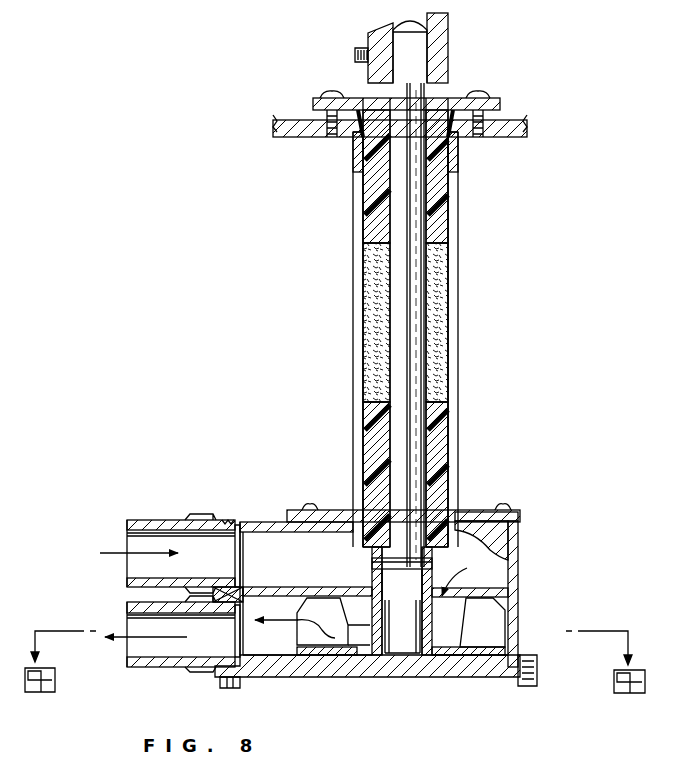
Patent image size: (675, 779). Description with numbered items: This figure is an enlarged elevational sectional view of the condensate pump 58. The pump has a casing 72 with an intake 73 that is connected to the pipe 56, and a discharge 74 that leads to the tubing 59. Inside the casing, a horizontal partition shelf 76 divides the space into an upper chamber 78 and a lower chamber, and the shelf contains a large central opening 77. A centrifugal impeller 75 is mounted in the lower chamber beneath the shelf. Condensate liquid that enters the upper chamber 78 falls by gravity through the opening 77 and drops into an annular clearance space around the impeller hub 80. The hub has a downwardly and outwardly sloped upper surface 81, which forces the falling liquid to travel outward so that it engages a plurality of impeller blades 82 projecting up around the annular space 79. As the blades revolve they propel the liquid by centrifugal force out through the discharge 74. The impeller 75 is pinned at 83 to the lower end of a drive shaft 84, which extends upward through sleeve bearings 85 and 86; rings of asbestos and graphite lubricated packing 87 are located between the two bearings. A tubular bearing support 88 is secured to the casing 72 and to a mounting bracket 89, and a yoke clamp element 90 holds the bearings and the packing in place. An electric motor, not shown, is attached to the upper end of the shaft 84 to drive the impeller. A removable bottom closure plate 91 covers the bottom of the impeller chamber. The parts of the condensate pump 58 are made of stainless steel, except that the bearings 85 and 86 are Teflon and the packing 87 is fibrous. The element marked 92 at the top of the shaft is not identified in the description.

The pipe 56 is at (142, 520).
The condensate pump 58 is at (472, 238).
The tubing 59 is at (142, 667).
The casing 72 is at (518, 562).
The intake 73 is at (219, 550).
The discharge 74 is at (215, 652).
The centrifugal impeller 75 is at (338, 655).
The horizontal partition shelf 76 is at (282, 590).
The central opening 77 is at (352, 587).
The upper chamber 78 is at (296, 588).
The annular space 79 is at (360, 607).
The impeller hub 80 is at (438, 633).
The sloped upper surface 81 is at (437, 628).
The impeller blades 82 is at (470, 638).
The pin 83 is at (428, 564).
The drive shaft 84 is at (418, 66).
The sleeve bearing 85 is at (438, 420).
The sleeve bearing 86 is at (440, 200).
The lubricated packing 87 is at (450, 297).
The tubular bearing support 88 is at (456, 306).
The mounting bracket 89 is at (518, 138).
The yoke clamp element 90 is at (452, 99).
The removable bottom closure plate 91 is at (305, 667).
The cap nut 92 is at (450, 33).